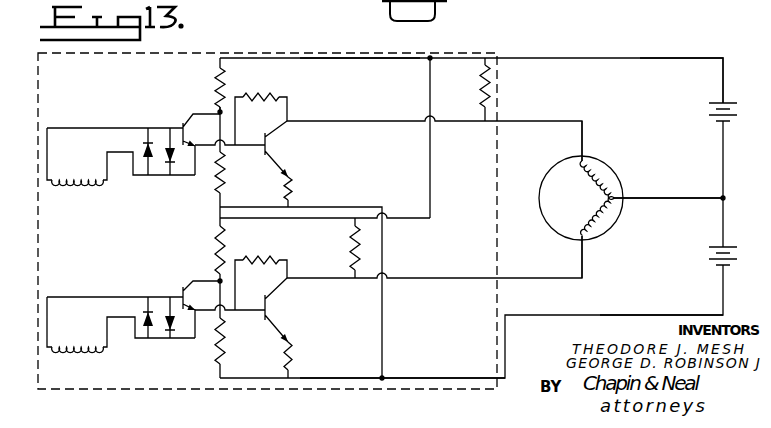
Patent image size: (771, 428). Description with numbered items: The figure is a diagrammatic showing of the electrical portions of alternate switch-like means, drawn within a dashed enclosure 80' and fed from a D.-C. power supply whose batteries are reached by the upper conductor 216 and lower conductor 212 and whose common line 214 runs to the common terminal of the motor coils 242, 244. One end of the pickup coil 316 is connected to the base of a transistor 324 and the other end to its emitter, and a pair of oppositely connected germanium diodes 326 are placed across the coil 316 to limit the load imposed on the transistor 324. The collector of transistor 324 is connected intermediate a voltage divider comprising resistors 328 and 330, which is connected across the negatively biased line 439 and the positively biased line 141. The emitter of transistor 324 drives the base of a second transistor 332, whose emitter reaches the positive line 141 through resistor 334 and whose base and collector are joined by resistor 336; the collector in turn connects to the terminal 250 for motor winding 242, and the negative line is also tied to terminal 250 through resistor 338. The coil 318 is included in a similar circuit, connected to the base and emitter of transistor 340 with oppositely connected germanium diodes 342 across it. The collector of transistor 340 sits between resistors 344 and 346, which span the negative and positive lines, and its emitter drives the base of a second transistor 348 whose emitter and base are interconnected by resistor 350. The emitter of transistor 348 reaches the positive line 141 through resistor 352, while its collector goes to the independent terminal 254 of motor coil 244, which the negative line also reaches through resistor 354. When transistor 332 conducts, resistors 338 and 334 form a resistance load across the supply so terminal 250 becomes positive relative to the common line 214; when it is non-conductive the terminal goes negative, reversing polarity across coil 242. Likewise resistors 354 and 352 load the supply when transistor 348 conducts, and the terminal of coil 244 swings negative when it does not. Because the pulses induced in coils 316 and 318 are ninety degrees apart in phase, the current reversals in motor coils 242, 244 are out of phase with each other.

The control circuit 80' is at (291, 214).
The conductor 212 is at (700, 315).
The common line 214 is at (672, 200).
The conductor 216 is at (681, 58).
The motor winding 242 is at (604, 180).
The motor coil 244 is at (605, 228).
The terminal 250 is at (584, 130).
The lead 254 is at (584, 270).
The coil 316 is at (80, 178).
The coil 318 is at (80, 345).
The transistor 324 is at (183, 120).
The diodes 326 is at (148, 170).
The resistor 328 is at (226, 82).
The resistor 330 is at (213, 188).
The second transistor 332 is at (266, 153).
The resistor 334 is at (291, 176).
The resistor 336 is at (280, 96).
The resistor 338 is at (490, 106).
The transistor 340 is at (183, 286).
The germanium diodes 342 is at (150, 335).
The resistor 344 is at (226, 248).
The resistor 346 is at (213, 352).
The second transistor 348 is at (268, 306).
The resistor 350 is at (280, 258).
The resistor 352 is at (292, 353).
The resistor 354 is at (351, 262).
The conductor 439 is at (366, 62).
The positively biased line 141 is at (410, 380).